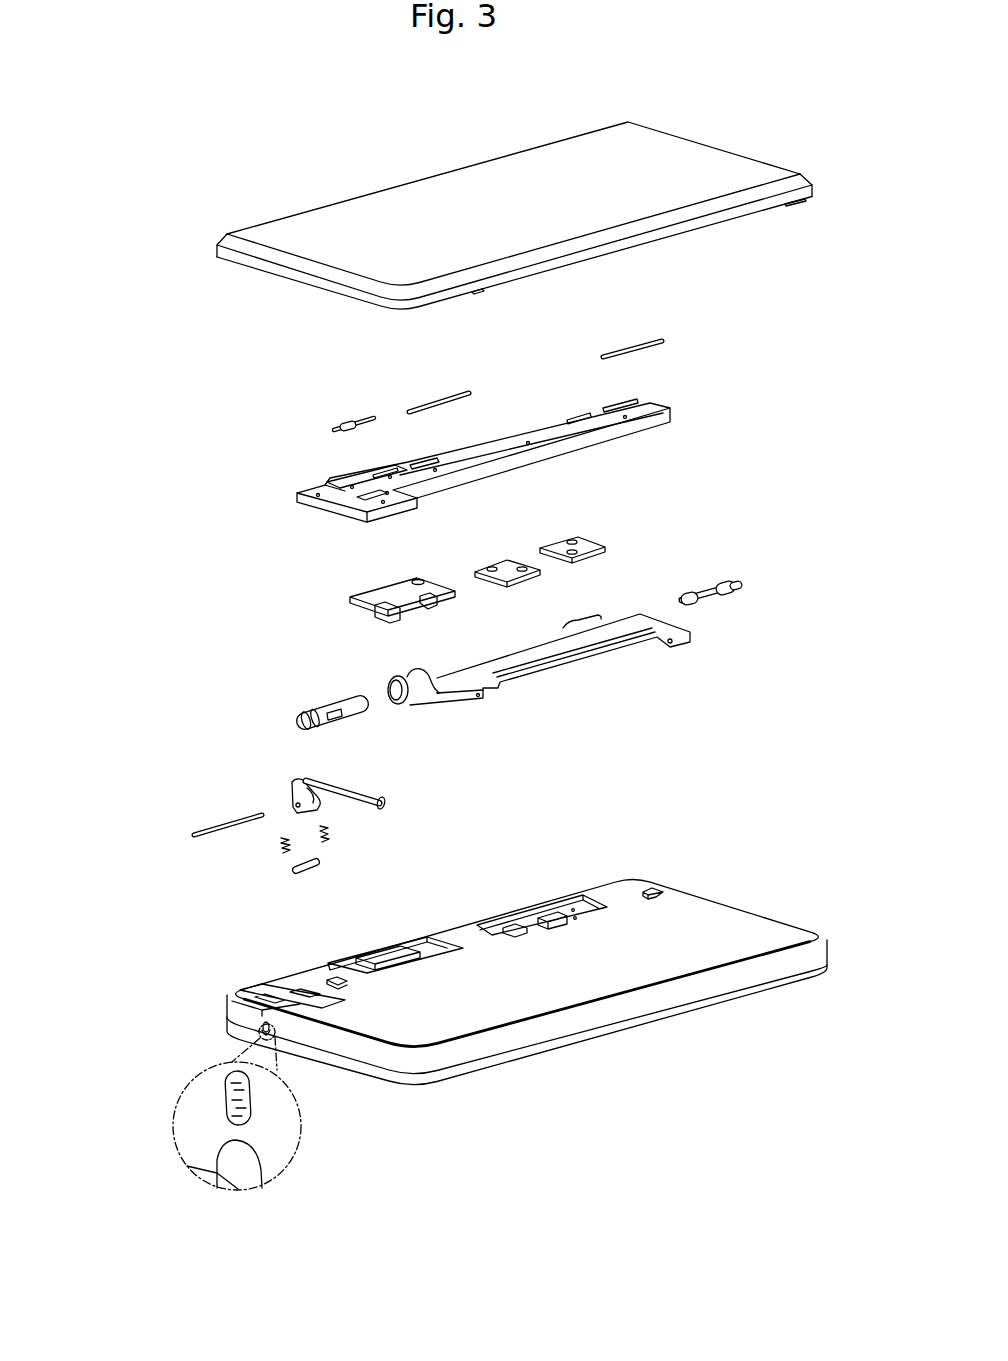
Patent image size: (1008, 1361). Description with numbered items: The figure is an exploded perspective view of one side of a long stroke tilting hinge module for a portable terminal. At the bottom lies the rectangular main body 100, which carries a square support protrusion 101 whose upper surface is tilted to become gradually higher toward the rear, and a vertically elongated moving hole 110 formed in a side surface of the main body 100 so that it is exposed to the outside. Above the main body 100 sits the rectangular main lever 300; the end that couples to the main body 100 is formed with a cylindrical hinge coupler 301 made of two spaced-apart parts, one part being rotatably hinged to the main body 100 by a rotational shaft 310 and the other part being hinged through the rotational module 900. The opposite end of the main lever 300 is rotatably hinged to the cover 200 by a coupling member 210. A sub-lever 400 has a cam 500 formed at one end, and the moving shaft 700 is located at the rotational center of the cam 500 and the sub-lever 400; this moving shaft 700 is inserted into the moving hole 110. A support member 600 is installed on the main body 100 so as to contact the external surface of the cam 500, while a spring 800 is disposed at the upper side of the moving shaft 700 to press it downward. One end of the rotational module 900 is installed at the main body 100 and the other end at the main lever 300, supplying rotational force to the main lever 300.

The main body 100 is at (720, 943).
The support protrusion 101 is at (653, 888).
The moving hole 110 is at (238, 1098).
The cover 200 is at (707, 172).
The coupling member 210 is at (703, 412).
The main lever 300 is at (542, 653).
The hinge coupler 301 is at (600, 620).
The rotational shaft 310 is at (716, 592).
The sub-lever 400 is at (298, 779).
The cam 500 is at (323, 790).
The support member 600 is at (313, 870).
The moving shaft 700 is at (223, 822).
The spring 800 is at (328, 833).
The rotational module 900 is at (332, 702).